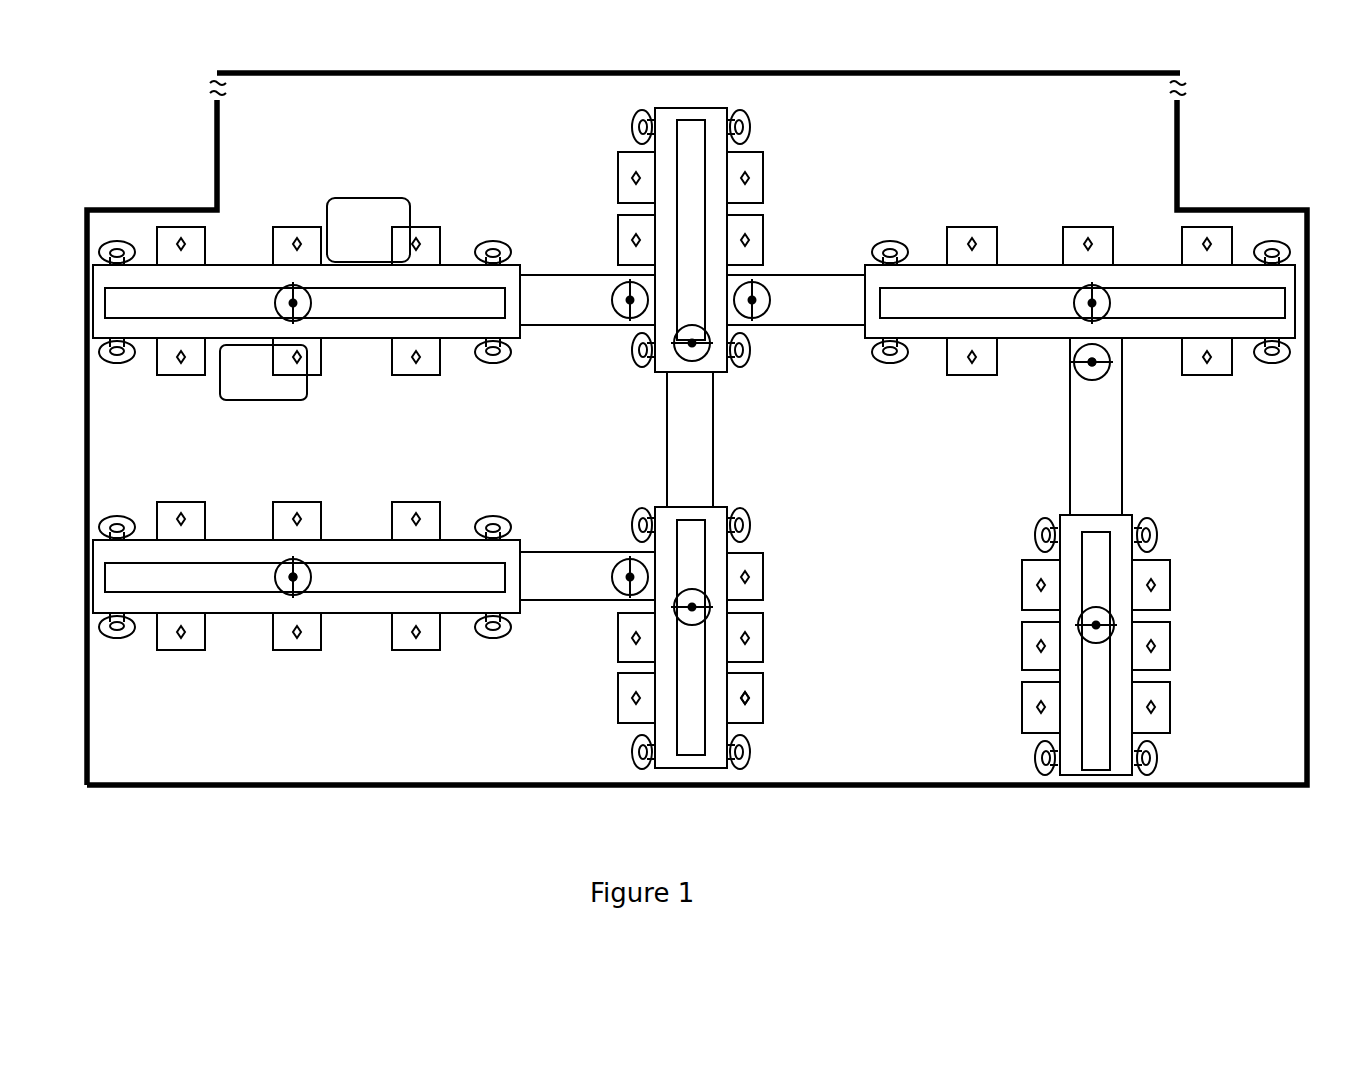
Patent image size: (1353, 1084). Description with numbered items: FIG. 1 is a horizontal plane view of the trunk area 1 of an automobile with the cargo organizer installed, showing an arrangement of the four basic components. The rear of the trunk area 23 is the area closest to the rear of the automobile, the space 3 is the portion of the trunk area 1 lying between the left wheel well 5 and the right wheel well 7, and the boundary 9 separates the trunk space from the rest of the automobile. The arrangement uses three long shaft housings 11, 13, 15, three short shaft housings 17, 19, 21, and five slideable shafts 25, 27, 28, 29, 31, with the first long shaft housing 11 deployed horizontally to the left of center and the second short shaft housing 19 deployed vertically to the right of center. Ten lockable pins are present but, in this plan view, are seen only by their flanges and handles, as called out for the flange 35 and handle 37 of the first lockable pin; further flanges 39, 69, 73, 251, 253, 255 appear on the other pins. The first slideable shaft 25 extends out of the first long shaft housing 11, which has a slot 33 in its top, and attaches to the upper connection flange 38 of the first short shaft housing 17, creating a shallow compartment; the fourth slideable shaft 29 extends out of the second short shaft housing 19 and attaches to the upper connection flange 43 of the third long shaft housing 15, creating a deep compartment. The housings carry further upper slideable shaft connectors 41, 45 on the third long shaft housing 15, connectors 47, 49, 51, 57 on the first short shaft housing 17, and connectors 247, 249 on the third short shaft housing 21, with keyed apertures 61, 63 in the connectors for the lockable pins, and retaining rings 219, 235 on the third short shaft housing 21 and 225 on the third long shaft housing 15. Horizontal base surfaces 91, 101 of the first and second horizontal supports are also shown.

The interior of automobile trunk 1 is at (461, 166).
The space within automobile trunk between wheel wells 3 is at (450, 105).
The left wheel well area 5 is at (130, 153).
The right wheel well area 7 is at (1225, 146).
The boundary between automobile trunk space and automobile 9 is at (1305, 605).
The first long shaft housing 11 is at (306, 595).
The second long shaft housing 13 is at (342, 340).
The third long shaft housing 15 is at (1080, 313).
The first short shaft housing 17 is at (694, 623).
The second short shaft housing 19 is at (878, 57).
The third short shaft housing 21 is at (676, 251).
The rear of trunk area 23 is at (917, 835).
The first slideable shaft 25 is at (553, 552).
The second slideable shaft 27 is at (793, 275).
The third slideable shaft 28 is at (713, 433).
The fourth slideable shaft 29 is at (1122, 432).
The fifth slideable shaft 31 is at (530, 275).
The slot in top of first long shaft housing 33 is at (200, 563).
The flange on first lockable pin 35 is at (313, 582).
The handle on first lockable pin 37 is at (307, 568).
The first upper slideable shaft connector on first short shaft housing 38 is at (630, 552).
The flange on second lockable pin 39 is at (618, 590).
The first upper slideable shaft connector on third long shaft housing 41 is at (945, 352).
The second upper slideable shaft connector on third long shaft housing 43 is at (1070, 350).
The third upper slideable shaft connector on third long shaft housing 45 is at (1182, 355).
The second upper slideable shaft connector on first short shaft housing 47 is at (763, 575).
The third upper slideable shaft connector on first short shaft housing 49 is at (763, 635).
The fourth upper slideable shaft connector on first short shaft housing 51 is at (763, 695).
The fifth upper slideable shaft connector on first short shaft housing 57 is at (618, 715).
The keyed aperture in first upper slideable shaft connector 61 is at (618, 695).
The keyed aperture in second upper slideable shaft connector 63 is at (758, 698).
The flange on third lockable pin 69 is at (1085, 370).
The flange on fifth lockable pin 73 is at (1078, 625).
The horizontal surface of base of first horizontal support 91 is at (339, 245).
The horizontal surface of base of second horizontal support 101 is at (224, 395).
The first upper retaining ring on third short shaft housing 219 is at (745, 360).
The second upper retaining ring on third long shaft housing 225 is at (1275, 362).
The second upper retaining ring on third short shaft housing 235 is at (630, 355).
The first upper slideable shaft connector on third short shaft housing 247 is at (630, 283).
The second upper slideable shaft connector on third short shaft housing 249 is at (752, 322).
The flange on seventh lockable pin 251 is at (615, 312).
The flange on eighth lockable pin 253 is at (678, 345).
The flange on ninth lockable pin 255 is at (754, 288).